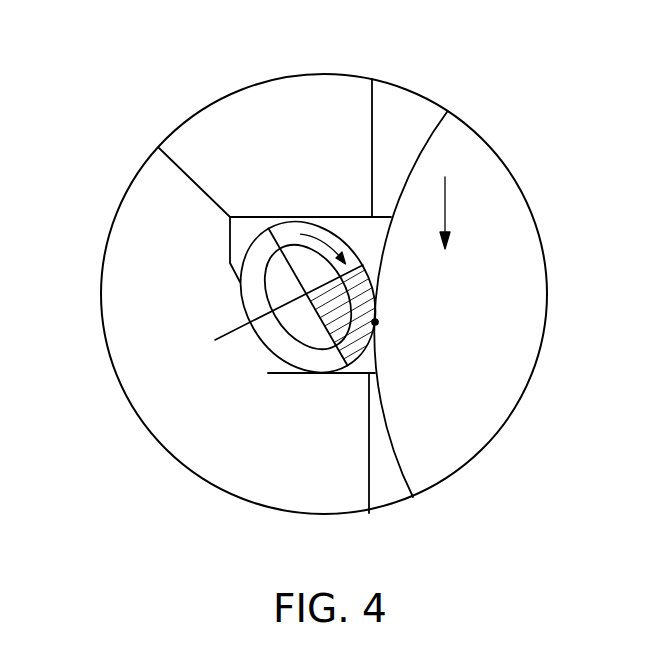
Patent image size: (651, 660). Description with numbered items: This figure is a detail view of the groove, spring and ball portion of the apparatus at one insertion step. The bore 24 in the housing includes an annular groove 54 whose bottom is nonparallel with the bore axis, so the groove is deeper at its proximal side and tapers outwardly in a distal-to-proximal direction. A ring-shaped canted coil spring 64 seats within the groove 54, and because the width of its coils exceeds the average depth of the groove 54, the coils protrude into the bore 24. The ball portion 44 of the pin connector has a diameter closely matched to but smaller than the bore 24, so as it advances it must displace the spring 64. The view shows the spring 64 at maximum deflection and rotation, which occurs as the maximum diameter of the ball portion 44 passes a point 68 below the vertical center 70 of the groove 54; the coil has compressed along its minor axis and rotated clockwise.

The annular groove 54 is at (349, 217).
The ball portion 44 is at (401, 470).
The bore 24 is at (368, 432).
The vertical center of the groove 70 is at (375, 322).
The point 68 is at (215, 340).
The canted coil spring 64 is at (274, 357).